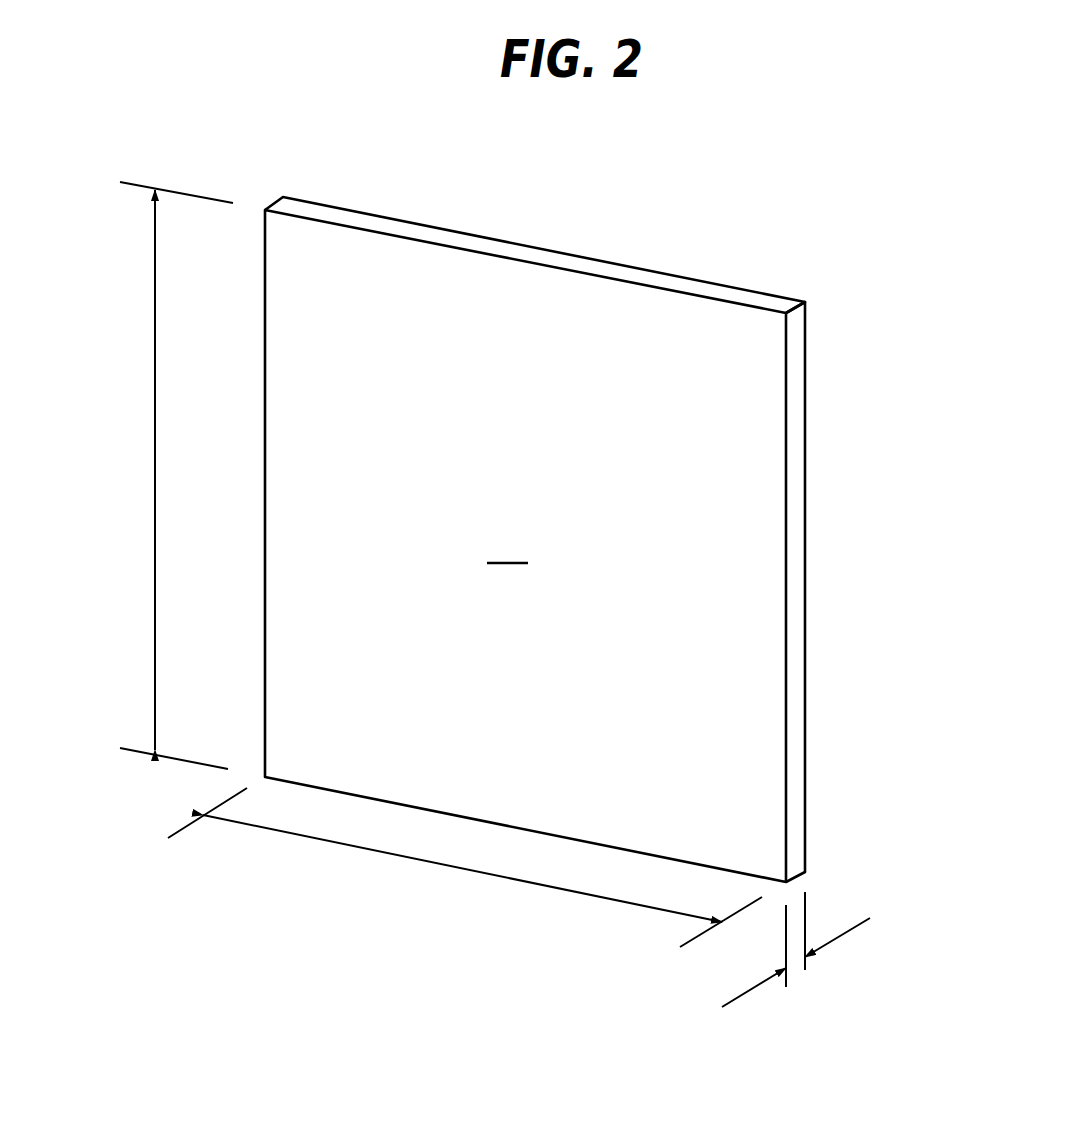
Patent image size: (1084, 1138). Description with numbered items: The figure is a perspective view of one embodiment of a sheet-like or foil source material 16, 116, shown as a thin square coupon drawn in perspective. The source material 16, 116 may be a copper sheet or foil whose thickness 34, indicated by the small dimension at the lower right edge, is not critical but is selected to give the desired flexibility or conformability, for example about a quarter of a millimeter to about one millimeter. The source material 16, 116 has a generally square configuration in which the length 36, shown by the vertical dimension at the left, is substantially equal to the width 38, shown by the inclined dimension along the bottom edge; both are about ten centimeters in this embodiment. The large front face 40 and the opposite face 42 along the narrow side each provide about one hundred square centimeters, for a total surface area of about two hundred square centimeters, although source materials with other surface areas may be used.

The source material 16 is at (609, 524).
The source material 116 is at (609, 524).
The thickness 34 is at (800, 968).
The length 36 is at (155, 453).
The width 38 is at (440, 865).
The side or face 40 is at (525, 546).
The side or face 42 is at (805, 506).